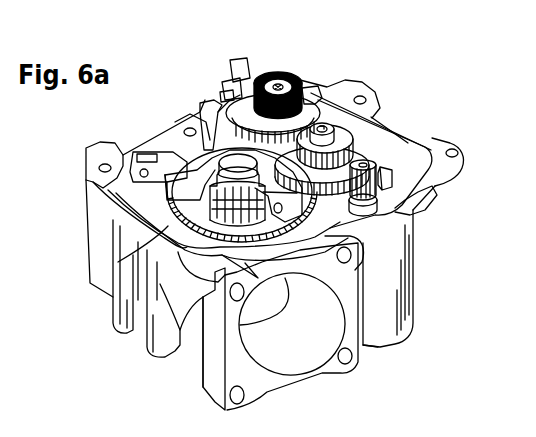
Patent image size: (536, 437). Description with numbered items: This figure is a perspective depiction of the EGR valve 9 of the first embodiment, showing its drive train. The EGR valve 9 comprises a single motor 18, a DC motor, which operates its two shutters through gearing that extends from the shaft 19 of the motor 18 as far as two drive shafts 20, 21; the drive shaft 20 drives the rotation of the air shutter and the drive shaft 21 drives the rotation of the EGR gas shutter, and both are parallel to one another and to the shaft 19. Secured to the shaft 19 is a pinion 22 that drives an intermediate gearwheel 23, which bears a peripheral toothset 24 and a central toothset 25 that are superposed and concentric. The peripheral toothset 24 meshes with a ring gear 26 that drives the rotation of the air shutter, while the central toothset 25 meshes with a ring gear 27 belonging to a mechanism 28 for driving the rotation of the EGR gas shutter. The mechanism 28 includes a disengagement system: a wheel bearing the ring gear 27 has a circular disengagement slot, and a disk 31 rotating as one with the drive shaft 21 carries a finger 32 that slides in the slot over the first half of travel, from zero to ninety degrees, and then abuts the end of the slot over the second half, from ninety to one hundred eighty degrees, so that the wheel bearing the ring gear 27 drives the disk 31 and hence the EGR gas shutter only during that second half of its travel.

The EGR valve 9 is at (440, 92).
The motor 18 is at (425, 208).
The shaft of the motor 19 is at (372, 165).
The drive shaft 20 is at (195, 150).
The drive shaft 21 is at (285, 72).
The pinion 22 is at (392, 196).
The intermediate gearwheel 23 is at (352, 126).
The peripheral toothset 24 is at (310, 204).
The central toothset 25 is at (352, 248).
The ring gear 26 is at (185, 190).
The ring gear 27 is at (218, 110).
The mechanism for driving the rotation of the EGR gas shutter 28 is at (266, 55).
The disk 31 is at (330, 100).
The finger 32 is at (307, 104).